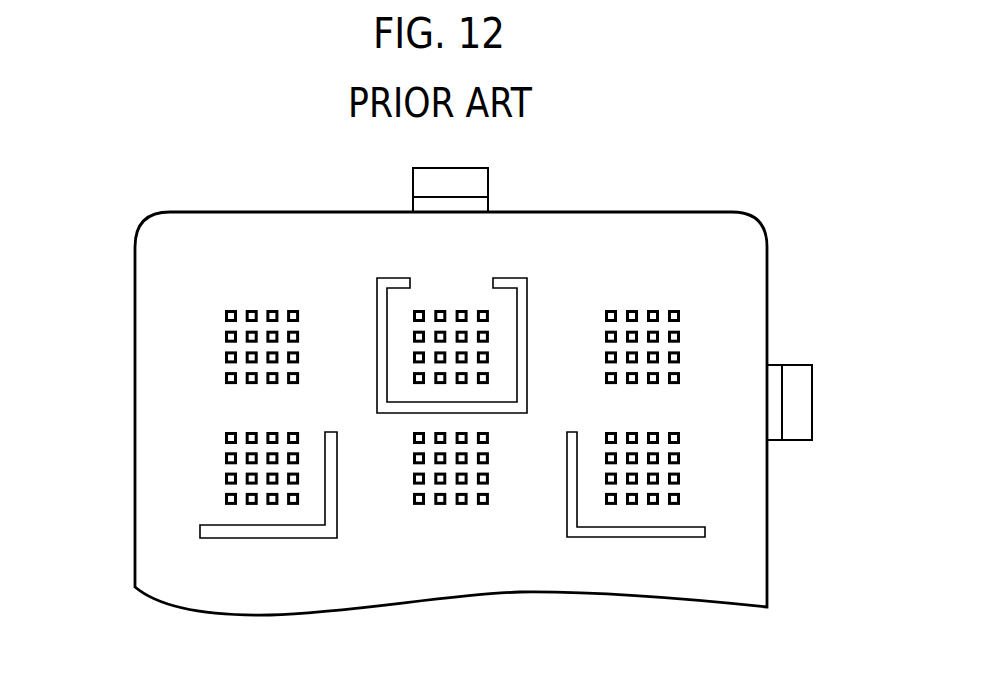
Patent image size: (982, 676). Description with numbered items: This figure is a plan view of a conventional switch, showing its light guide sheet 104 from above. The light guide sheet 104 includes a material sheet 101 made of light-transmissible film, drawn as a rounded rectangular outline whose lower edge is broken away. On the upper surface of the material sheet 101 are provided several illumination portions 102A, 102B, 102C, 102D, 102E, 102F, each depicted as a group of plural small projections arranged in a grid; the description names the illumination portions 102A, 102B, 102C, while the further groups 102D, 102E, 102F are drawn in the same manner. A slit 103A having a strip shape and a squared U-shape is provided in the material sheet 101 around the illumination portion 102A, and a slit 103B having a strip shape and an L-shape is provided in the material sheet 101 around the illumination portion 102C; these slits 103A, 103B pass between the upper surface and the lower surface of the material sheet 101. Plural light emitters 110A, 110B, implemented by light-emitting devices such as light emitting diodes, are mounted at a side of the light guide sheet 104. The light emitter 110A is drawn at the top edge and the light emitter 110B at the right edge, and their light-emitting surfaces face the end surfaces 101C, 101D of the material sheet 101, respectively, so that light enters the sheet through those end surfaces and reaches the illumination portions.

The material sheet 101 is at (740, 230).
The light guide sheet 104 is at (183, 243).
The light emitter 110A is at (473, 186).
The end surface of material sheet 101C is at (453, 212).
The light emitter 110B is at (797, 380).
The end surface of material sheet 101D is at (765, 413).
The illumination portion 102A is at (470, 338).
The illumination portion 102B is at (655, 325).
The illumination portion 102C is at (660, 470).
The component mounting pad group 102D is at (460, 478).
The component mounting pad group 102E is at (272, 348).
The component mounting pad group 102F is at (263, 478).
The slit 103A is at (382, 317).
The slit 103B is at (618, 532).